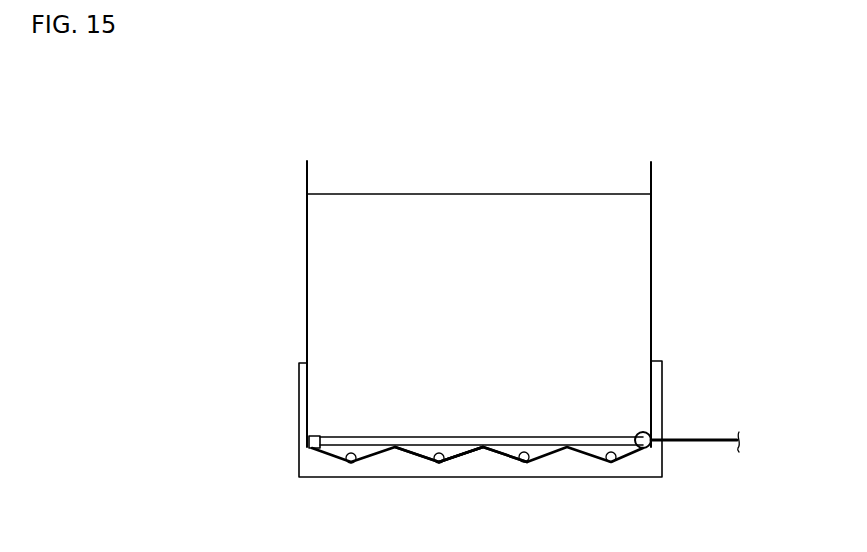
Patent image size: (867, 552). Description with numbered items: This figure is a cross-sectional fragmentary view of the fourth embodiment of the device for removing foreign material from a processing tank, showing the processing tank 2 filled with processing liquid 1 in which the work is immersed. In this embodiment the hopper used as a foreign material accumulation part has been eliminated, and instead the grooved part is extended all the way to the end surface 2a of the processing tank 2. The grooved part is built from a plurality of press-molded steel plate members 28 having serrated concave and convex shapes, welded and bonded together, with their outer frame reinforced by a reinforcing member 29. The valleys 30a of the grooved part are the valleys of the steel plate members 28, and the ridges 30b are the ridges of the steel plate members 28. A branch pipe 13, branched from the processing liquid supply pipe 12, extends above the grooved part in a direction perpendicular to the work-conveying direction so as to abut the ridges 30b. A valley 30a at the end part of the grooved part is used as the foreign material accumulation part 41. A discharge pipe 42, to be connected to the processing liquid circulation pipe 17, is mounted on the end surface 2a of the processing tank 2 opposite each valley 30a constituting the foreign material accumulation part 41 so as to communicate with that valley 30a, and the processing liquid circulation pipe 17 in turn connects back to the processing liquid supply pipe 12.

The processing liquid 1 is at (351, 210).
The processing tank 2 is at (668, 216).
The end surface 2a is at (563, 298).
The processing liquid supply pipe 12 is at (643, 432).
The branch pipe 13 is at (584, 437).
The processing liquid circulation pipe 17 is at (690, 443).
The steel plate member 28 is at (547, 447).
The reinforcing member 29 is at (460, 472).
The valley 30a is at (422, 454).
The ridge 30b is at (481, 446).
The foreign material accumulation part 41 is at (515, 462).
The discharge pipe 42 is at (610, 463).